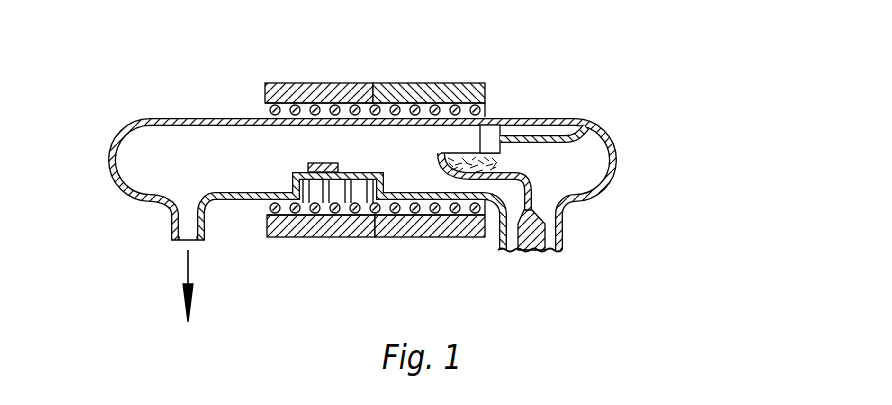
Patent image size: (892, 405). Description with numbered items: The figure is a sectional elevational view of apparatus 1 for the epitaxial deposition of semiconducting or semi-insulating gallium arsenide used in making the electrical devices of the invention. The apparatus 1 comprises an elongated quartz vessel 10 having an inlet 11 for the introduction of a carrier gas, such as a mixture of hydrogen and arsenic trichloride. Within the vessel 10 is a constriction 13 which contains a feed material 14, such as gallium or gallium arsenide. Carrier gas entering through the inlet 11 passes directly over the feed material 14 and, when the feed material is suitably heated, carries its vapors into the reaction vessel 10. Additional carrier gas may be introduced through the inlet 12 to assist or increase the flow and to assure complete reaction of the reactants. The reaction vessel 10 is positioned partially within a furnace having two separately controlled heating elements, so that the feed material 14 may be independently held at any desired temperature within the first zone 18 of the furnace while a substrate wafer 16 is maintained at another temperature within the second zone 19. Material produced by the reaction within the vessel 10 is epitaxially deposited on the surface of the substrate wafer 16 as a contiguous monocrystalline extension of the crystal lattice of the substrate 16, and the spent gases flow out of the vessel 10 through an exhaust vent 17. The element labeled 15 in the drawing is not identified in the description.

The apparatus 1 is at (117, 128).
The quartz vessel 10 is at (186, 118).
The inlet 11 is at (552, 252).
The inlet 12 is at (516, 252).
The constriction 13 is at (530, 140).
The feed material 14 is at (438, 160).
The support block 15 is at (482, 140).
The substrate wafer 16 is at (312, 163).
The exhaust vent 17 is at (172, 229).
The first zone 18 is at (438, 83).
The second zone 19 is at (338, 83).